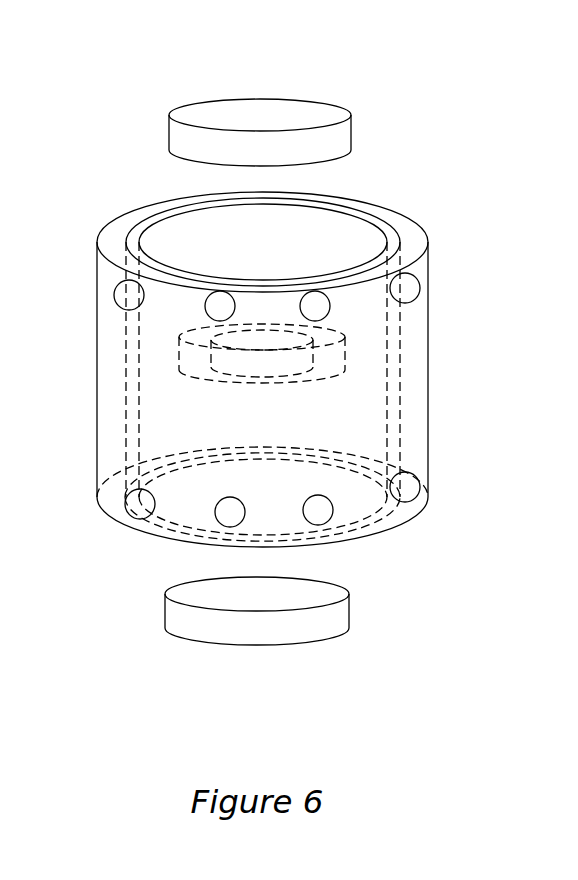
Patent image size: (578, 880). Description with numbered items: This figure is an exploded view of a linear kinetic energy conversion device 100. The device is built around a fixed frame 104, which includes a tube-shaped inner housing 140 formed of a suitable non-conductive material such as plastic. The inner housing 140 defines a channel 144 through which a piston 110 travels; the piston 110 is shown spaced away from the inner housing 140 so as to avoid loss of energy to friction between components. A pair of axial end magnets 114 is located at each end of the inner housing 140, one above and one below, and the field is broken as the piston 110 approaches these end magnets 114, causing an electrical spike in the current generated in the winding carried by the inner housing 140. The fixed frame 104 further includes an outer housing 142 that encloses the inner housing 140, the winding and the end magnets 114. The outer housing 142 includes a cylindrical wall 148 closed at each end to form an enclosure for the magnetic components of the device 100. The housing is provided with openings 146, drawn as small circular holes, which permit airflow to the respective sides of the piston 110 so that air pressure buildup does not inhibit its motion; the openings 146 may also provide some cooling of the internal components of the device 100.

The linear kinetic energy conversion device 100 is at (442, 82).
The axial end magnet 114 is at (303, 108).
The outer housing 142 is at (118, 231).
The inner housing 140 is at (355, 238).
The channel 144 is at (236, 258).
The cylindrical wall 148 is at (105, 313).
The fixed frame 104 is at (418, 432).
The opening 146 is at (418, 277).
The piston 110 is at (345, 337).